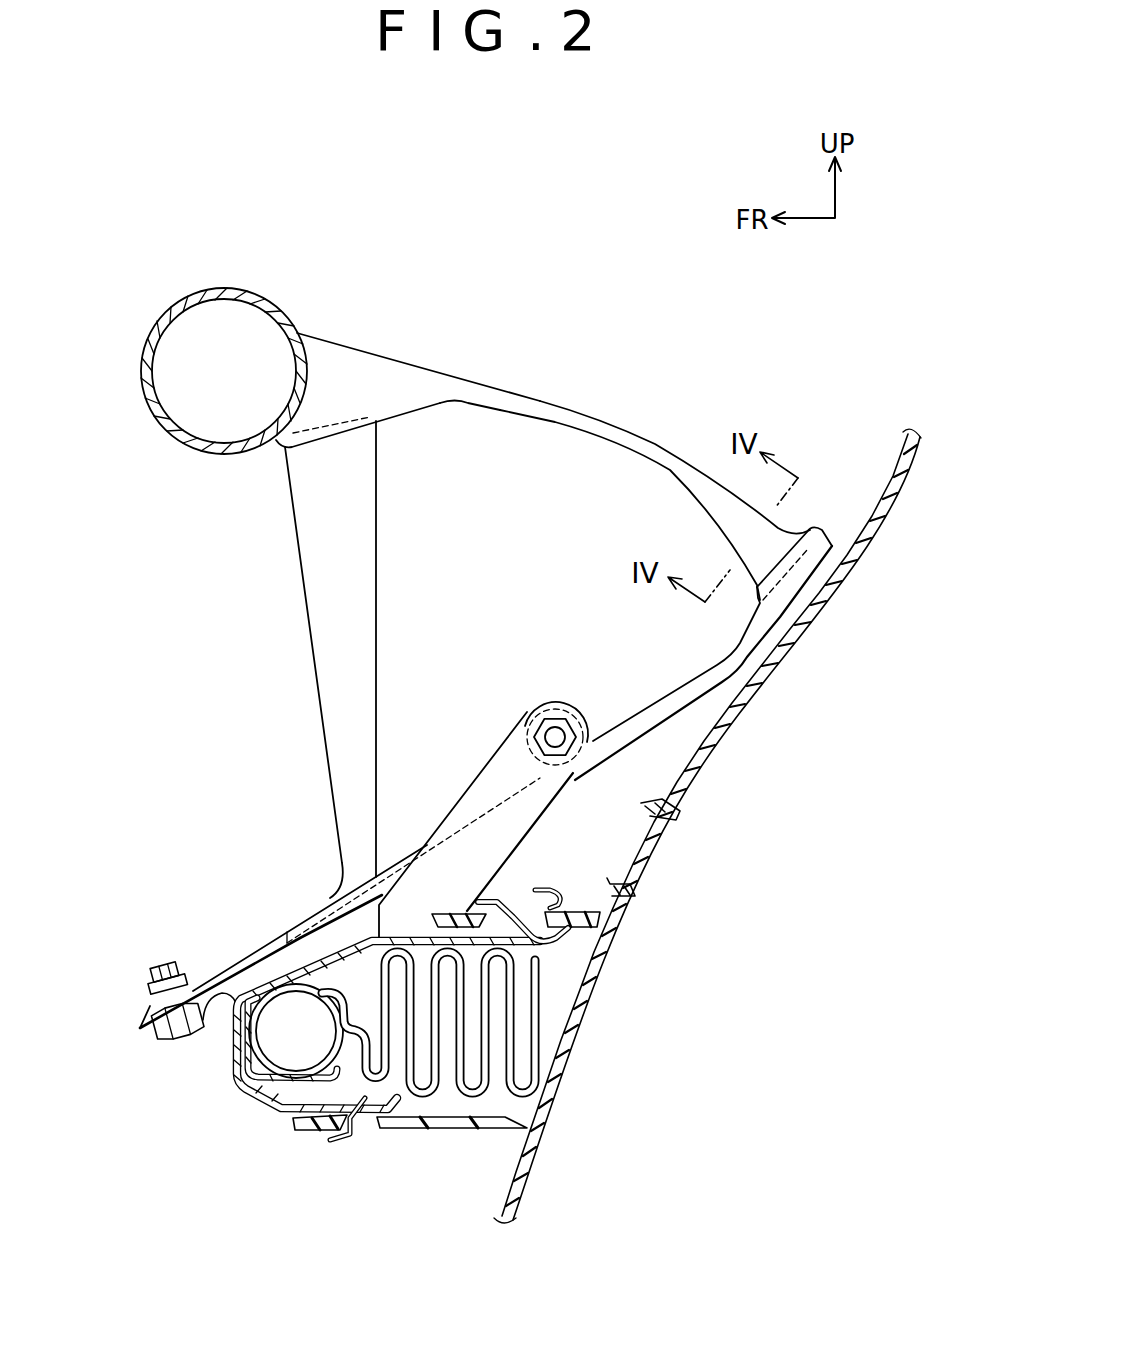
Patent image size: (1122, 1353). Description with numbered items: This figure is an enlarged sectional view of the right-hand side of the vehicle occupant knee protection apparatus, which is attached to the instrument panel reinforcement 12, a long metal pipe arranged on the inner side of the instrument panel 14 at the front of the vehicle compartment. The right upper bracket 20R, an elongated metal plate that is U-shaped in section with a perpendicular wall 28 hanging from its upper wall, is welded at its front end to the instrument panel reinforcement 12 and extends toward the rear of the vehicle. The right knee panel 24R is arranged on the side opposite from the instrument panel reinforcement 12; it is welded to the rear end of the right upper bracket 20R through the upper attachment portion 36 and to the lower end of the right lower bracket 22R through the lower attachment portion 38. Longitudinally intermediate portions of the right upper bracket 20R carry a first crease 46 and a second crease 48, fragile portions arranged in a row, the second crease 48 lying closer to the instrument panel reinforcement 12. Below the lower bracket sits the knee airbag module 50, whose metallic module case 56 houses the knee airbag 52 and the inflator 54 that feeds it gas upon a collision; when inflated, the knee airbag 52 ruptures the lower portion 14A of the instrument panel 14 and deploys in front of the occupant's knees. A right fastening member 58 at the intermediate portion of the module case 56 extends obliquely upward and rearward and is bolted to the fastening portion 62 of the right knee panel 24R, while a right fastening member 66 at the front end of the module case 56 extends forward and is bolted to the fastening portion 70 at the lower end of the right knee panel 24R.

The instrument panel reinforcement 12 is at (222, 290).
The instrument panel 14 is at (700, 793).
The lower portion of the instrument panel 14A is at (570, 1065).
The right upper bracket 20R is at (543, 433).
The right lower bracket 22R is at (310, 625).
The right knee panel 24R is at (739, 653).
The perpendicular wall 28 is at (388, 378).
The upper attachment portion 36 is at (800, 590).
The lower attachment portion 38 is at (325, 907).
The first crease 46 is at (636, 450).
The second crease 48 is at (453, 405).
The knee airbag module 50 is at (243, 1095).
The knee airbag 52 is at (437, 1093).
The inflator 54 is at (280, 1115).
The module case 56 is at (247, 988).
The right fastening member 58 is at (497, 750).
The fastening portion 62 is at (558, 712).
The right fastening member 66 is at (150, 1030).
The fastening portion 70 is at (143, 1013).